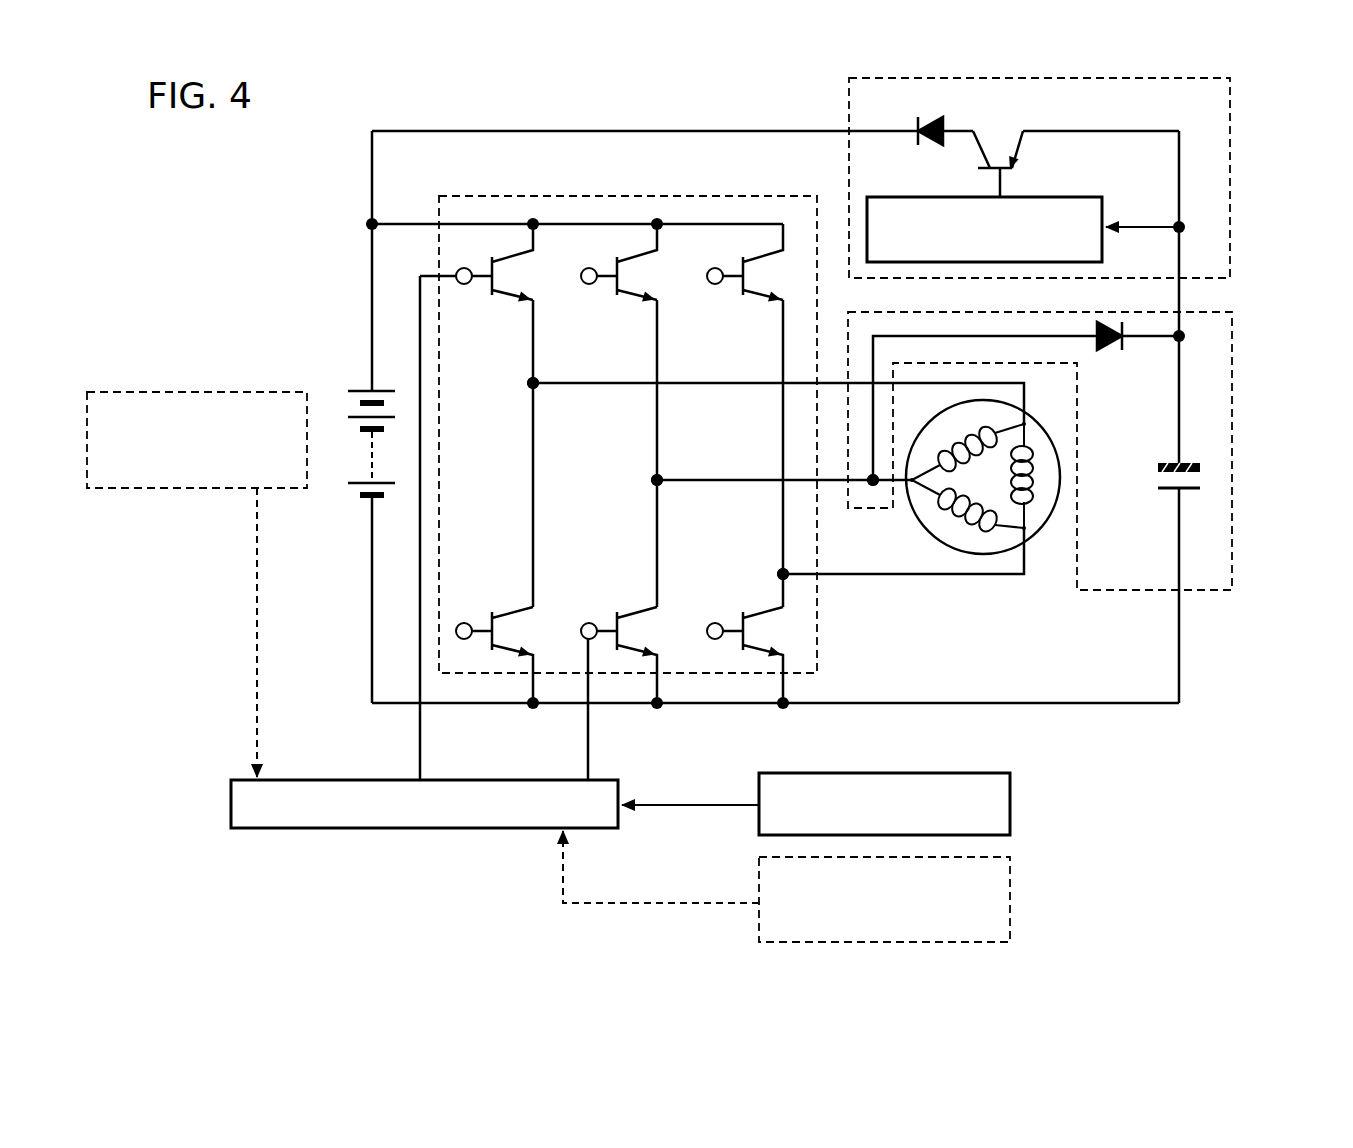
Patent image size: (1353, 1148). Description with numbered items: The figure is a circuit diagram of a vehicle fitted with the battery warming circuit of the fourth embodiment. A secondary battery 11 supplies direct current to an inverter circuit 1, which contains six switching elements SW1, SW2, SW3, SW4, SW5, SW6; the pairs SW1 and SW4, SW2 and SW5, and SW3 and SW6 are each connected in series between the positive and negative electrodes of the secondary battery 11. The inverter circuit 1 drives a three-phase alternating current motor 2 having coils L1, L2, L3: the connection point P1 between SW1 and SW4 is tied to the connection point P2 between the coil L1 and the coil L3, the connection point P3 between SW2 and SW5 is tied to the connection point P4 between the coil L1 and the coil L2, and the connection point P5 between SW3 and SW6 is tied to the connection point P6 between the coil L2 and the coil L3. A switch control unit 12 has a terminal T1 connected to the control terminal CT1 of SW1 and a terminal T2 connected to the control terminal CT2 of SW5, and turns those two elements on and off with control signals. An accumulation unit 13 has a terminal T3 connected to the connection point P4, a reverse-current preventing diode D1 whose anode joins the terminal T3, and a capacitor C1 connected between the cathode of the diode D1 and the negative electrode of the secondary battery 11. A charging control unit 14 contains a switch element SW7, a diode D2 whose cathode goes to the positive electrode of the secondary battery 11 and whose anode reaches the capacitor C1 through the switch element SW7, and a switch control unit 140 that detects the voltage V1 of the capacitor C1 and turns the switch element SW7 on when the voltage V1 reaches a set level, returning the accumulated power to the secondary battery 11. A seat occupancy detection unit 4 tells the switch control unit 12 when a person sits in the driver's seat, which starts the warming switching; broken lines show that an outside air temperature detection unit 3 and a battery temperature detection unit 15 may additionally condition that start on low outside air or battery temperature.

The inverter circuit 1 is at (500, 191).
The 3-phase alternating current motor 2 is at (1047, 528).
The outside air temperature detection unit 3 is at (1013, 903).
The seat occupancy detection unit 4 is at (1013, 805).
The secondary battery 11 is at (370, 390).
The switch control unit 12 is at (231, 803).
The accumulation unit 13 is at (1232, 330).
The charging control unit 14 is at (1230, 90).
The battery temperature detection unit 15 is at (197, 490).
The switch control unit 140 is at (897, 197).
The switching element SW1 is at (494, 279).
The switching element SW2 is at (619, 279).
The switching element SW3 is at (745, 279).
The switching element SW4 is at (494, 643).
The switching element SW5 is at (619, 643).
The switching element SW6 is at (745, 643).
The switch element SW7 is at (1023, 164).
The diode D1 is at (1112, 352).
The diode D2 is at (944, 116).
The capacitor C1 is at (1163, 467).
The coil L1 is at (968, 449).
The coil L2 is at (968, 511).
The coil L3 is at (1008, 476).
The connection point P1 is at (514, 383).
The connection point P2 is at (1036, 421).
The connection point P3 is at (638, 480).
The connection point P4 is at (907, 490).
The connection point P5 is at (764, 566).
The connection point P6 is at (1016, 534).
The terminal T1 is at (428, 772).
The terminal T2 is at (598, 772).
The terminal T3 is at (882, 462).
The control terminal CT1 is at (468, 262).
The control terminal CT2 is at (598, 618).
The voltage V1 is at (1161, 216).